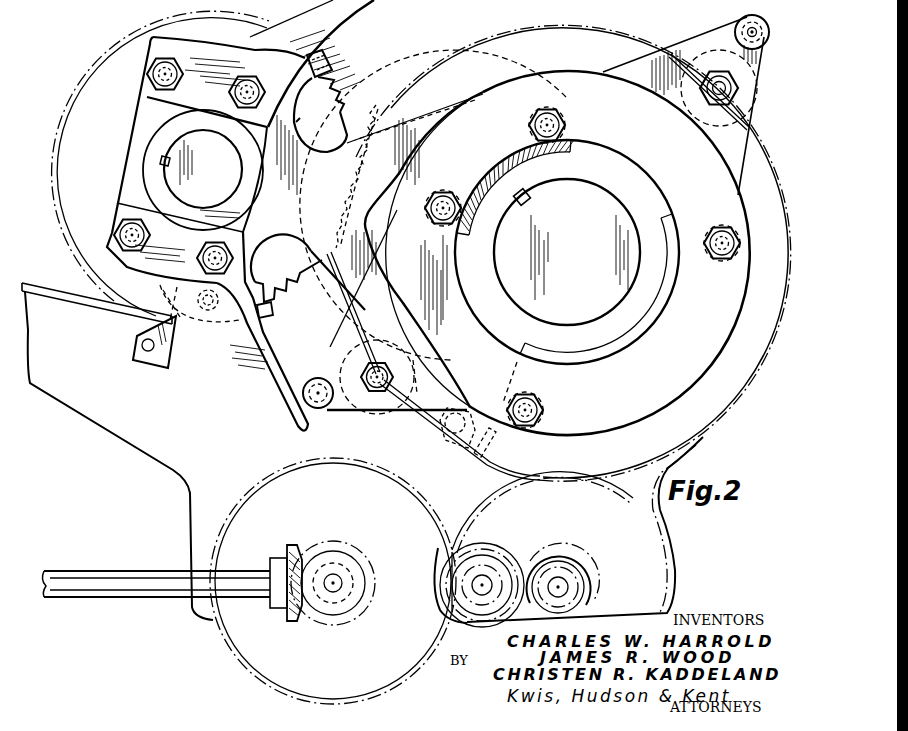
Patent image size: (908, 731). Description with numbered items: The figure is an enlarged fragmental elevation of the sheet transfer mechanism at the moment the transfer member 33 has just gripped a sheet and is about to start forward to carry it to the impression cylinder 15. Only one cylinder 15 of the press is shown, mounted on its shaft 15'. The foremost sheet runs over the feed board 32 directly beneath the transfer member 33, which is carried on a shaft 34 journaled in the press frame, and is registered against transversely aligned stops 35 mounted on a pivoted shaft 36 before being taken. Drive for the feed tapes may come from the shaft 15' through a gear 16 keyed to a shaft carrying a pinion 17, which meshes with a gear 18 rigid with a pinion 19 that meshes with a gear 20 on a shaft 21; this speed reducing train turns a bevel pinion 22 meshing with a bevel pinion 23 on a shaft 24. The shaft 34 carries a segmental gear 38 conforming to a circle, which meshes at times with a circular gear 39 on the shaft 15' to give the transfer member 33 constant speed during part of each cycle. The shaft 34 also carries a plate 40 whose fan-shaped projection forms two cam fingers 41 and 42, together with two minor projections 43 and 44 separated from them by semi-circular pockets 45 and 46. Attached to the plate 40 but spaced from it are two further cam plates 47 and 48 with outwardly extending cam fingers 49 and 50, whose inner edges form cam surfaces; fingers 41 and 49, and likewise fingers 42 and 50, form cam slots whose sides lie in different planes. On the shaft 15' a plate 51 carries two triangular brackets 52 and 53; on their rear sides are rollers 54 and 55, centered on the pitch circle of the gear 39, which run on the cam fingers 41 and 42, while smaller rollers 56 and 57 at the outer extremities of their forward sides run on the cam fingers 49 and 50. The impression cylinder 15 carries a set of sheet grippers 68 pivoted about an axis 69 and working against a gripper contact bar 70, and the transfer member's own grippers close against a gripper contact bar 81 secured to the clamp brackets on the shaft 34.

The cylinder 15 is at (573, 241).
The shaft 15' is at (567, 252).
The gear 16 is at (655, 593).
The pinion 17 is at (590, 552).
The gear 18 is at (546, 560).
The pinion 19 is at (482, 556).
The gear 20 is at (412, 508).
The shaft 21 is at (338, 580).
The bevel pinion 22 is at (370, 588).
The bevel pinion 23 is at (292, 546).
The shaft 24 is at (146, 572).
The feed board 32 is at (90, 305).
The transfer member 33 is at (222, 50).
The shaft 34 is at (178, 147).
The stops 35 is at (172, 345).
The shaft 36 is at (142, 346).
The segmental gear 38 is at (340, 90).
The circular gear 39 is at (357, 172).
The plate 40 is at (302, 127).
The cam finger 41 is at (346, 302).
The cam finger 42 is at (428, 113).
The minor projection 43 is at (270, 316).
The minor projection 44 is at (330, 63).
The semi-circular pocket 45 is at (308, 272).
The semi-circular pocket 46 is at (300, 120).
The cam plate 47 is at (122, 222).
The cam plate 48 is at (150, 86).
The cam finger 49 is at (272, 398).
The cam finger 50 is at (384, 4).
The plate 51 is at (733, 201).
The triangular bracket 52 is at (416, 410).
The triangular bracket 53 is at (756, 116).
The roller 54 is at (378, 402).
The roller 55 is at (762, 80).
The roller 56 is at (318, 378).
The roller 57 is at (748, 14).
The sheet grippers 68 is at (470, 462).
The axis 69 is at (446, 432).
The gripper contact bar 70 is at (493, 447).
The gripper contact bar 81 is at (178, 300).